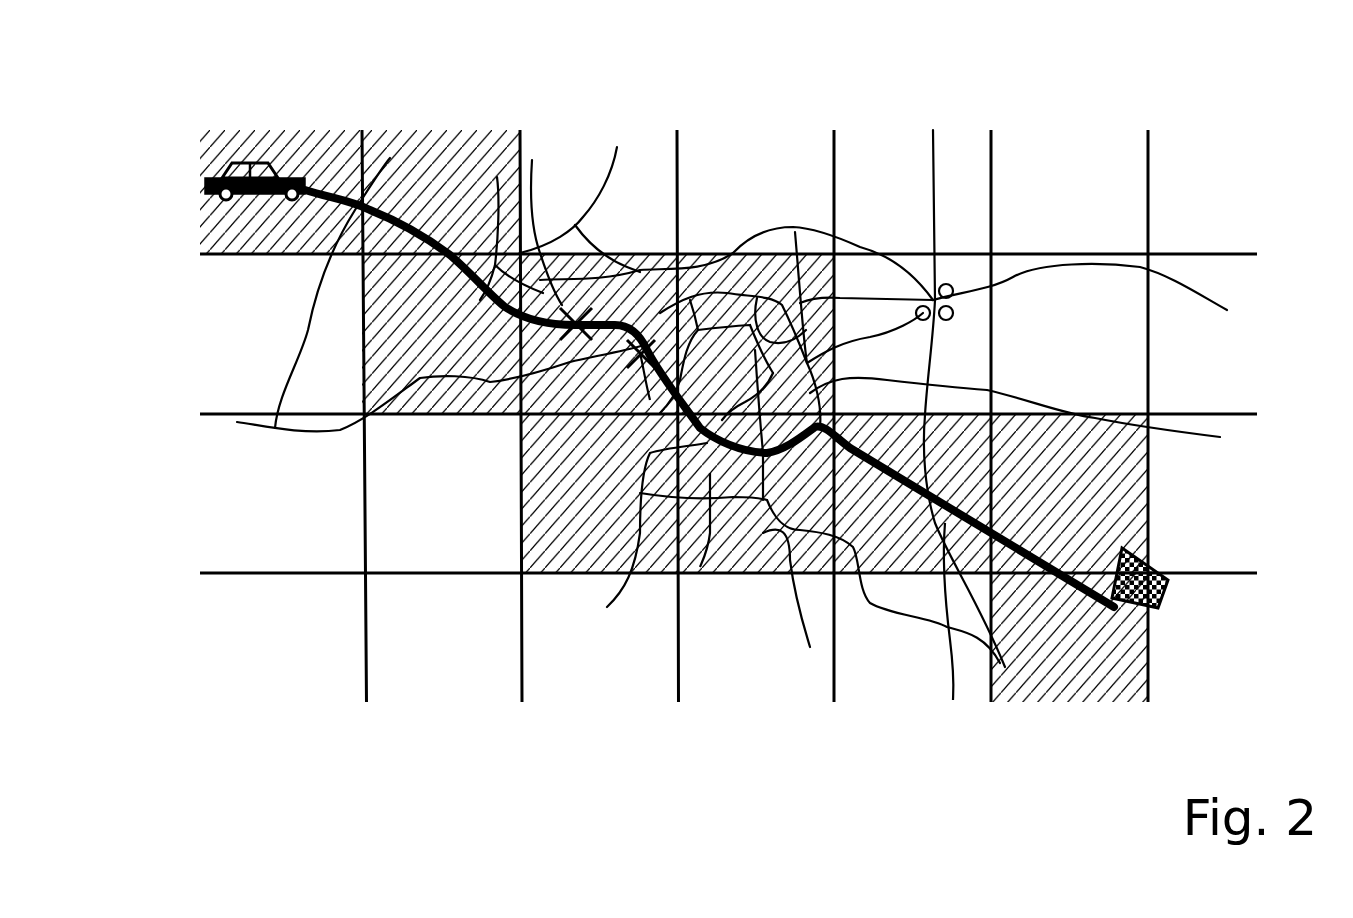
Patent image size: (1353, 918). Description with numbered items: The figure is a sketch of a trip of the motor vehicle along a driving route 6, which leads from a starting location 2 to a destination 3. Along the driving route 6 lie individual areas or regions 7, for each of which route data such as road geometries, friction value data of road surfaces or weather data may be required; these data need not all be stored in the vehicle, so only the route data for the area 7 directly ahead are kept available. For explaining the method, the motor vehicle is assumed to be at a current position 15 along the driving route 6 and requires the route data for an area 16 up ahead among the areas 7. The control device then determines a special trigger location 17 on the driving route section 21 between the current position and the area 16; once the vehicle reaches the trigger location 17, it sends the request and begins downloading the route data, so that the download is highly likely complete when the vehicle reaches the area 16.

The starting location 2 is at (203, 186).
The destination 3 is at (1110, 600).
The driving route 6 is at (953, 700).
The areas 7 is at (440, 153).
The current position 15 is at (568, 318).
The area up ahead 16 is at (710, 473).
The trigger location 17 is at (650, 400).
The driving route section 21 is at (641, 338).